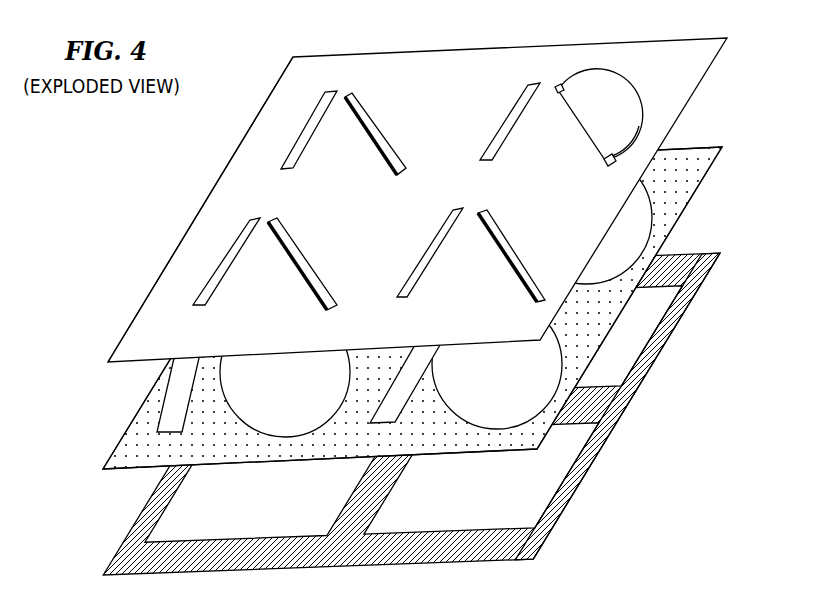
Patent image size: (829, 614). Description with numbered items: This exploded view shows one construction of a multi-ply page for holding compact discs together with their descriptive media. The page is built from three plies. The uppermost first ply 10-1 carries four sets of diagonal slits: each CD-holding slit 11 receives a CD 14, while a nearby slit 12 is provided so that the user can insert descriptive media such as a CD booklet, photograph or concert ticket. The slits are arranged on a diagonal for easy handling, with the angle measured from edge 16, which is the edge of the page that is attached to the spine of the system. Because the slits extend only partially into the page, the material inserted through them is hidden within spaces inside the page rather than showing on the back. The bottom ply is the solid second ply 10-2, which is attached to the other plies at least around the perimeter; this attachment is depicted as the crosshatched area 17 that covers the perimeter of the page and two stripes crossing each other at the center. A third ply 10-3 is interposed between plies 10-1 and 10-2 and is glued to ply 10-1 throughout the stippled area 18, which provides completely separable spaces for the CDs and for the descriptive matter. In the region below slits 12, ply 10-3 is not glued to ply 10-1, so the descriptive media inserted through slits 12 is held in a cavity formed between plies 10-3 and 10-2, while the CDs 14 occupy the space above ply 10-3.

The first ply 10-1 is at (452, 200).
The second ply 10-2 is at (712, 263).
The third ply 10-3 is at (448, 308).
The CD-holding slit 11 is at (367, 110).
The slit for descriptive media 12 is at (293, 165).
The CD 14 is at (623, 77).
The edge 16 is at (167, 262).
The crosshatched area 17 is at (625, 400).
The stippled area 18 is at (672, 218).